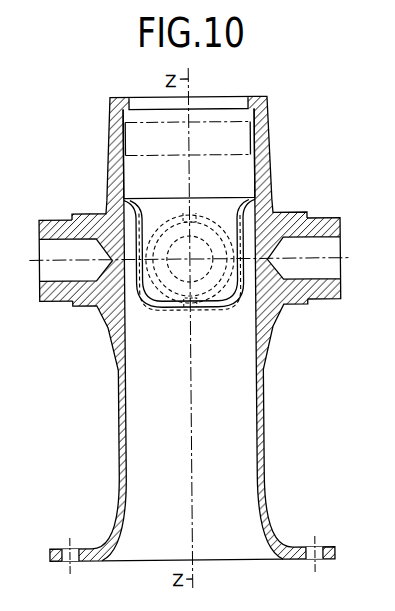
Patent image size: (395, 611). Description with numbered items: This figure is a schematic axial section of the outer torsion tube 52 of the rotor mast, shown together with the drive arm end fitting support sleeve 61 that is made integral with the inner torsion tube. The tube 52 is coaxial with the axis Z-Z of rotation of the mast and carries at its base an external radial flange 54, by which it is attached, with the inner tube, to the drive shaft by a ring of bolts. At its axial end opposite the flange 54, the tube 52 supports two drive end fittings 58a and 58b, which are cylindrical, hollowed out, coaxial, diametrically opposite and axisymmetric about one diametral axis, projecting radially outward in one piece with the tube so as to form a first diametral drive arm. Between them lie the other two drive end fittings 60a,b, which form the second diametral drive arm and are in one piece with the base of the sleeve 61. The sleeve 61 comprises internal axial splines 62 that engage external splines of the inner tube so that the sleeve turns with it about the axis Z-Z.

The outer torsion tube 52 is at (120, 453).
The external radial flange 54 is at (298, 550).
The drive end fitting 58a is at (67, 230).
The drive end fitting 58b is at (323, 230).
The drive end fittings 60a,b is at (168, 280).
The sleeve 61 is at (265, 180).
The internal axial splines 62 is at (252, 134).